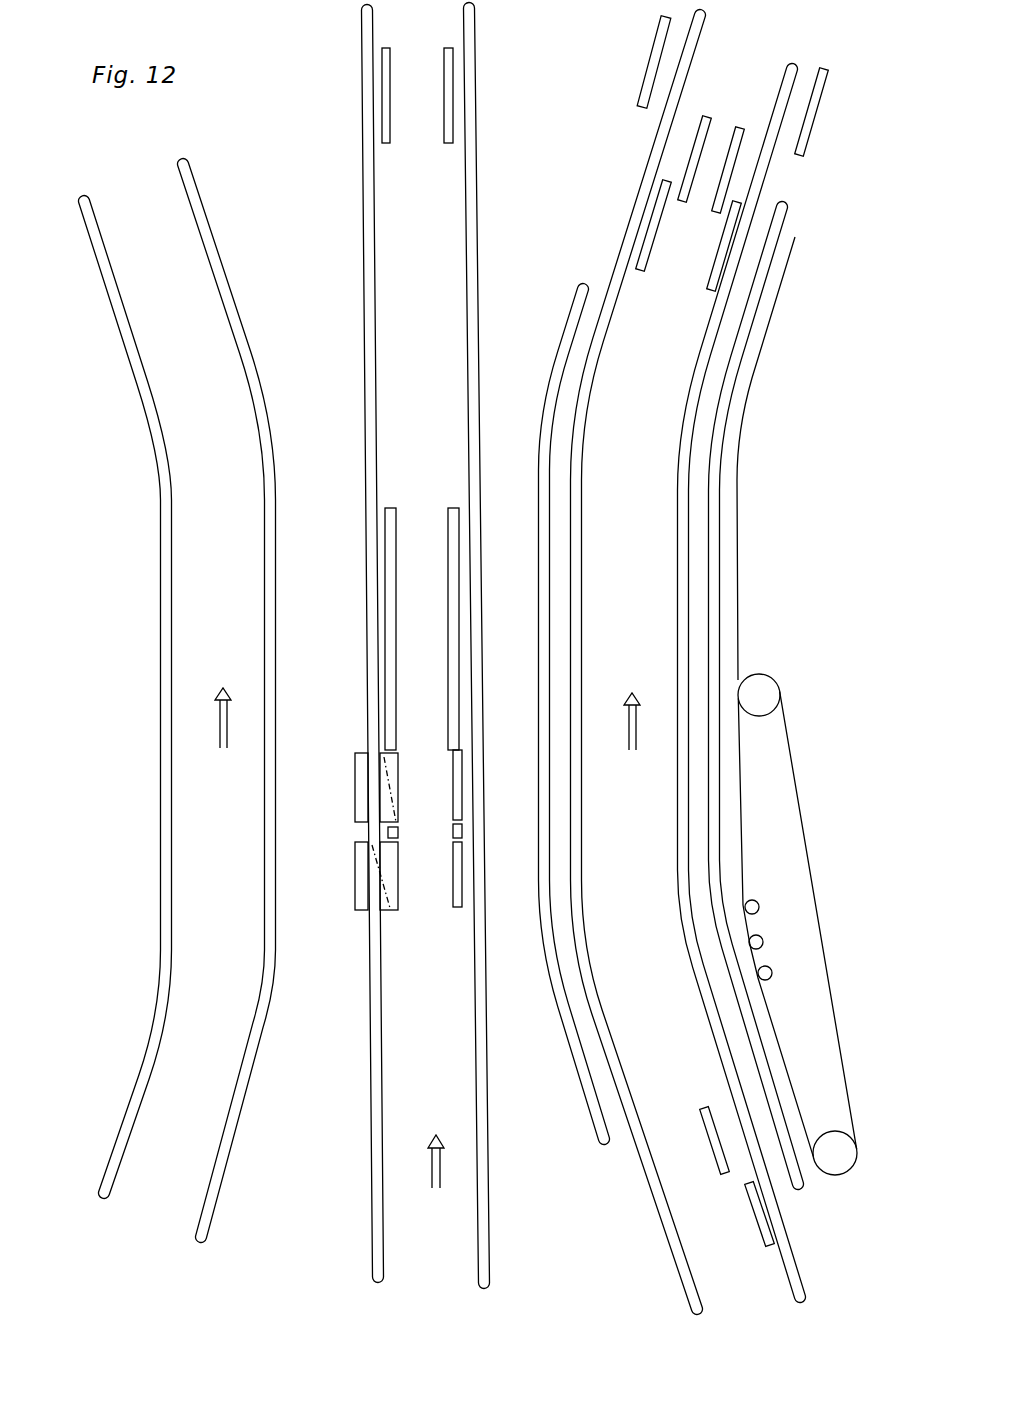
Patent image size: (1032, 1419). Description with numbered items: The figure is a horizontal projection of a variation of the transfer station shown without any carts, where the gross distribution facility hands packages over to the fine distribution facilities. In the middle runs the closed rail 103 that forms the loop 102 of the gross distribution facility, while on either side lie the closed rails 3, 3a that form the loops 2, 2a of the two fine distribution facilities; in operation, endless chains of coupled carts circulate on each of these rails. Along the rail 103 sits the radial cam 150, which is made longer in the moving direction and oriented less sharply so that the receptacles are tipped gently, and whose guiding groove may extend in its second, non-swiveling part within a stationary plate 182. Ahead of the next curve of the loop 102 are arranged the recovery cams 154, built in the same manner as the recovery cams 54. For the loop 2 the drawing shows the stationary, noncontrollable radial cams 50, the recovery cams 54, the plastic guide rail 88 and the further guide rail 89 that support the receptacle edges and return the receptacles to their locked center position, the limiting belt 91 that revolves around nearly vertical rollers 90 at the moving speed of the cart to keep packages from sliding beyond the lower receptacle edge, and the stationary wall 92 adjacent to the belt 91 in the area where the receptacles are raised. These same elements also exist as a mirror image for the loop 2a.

The loop 2 is at (698, 706).
The loop 2a is at (177, 743).
The rail 3 is at (785, 1252).
The rail 3a is at (230, 1102).
The radial cam 50 is at (758, 1220).
The recovery cam 54 is at (735, 212).
The guide rail 88 is at (657, 47).
The guide rail 89 is at (813, 117).
The roller 90 is at (767, 685).
The limiting belt 91 is at (740, 765).
The stationary wall 92 is at (752, 387).
The loop 102 is at (419, 683).
The rail 103 is at (468, 218).
The radial cam 150 is at (458, 907).
The recovery cam 154 is at (447, 137).
The stationary plate 182 is at (452, 527).